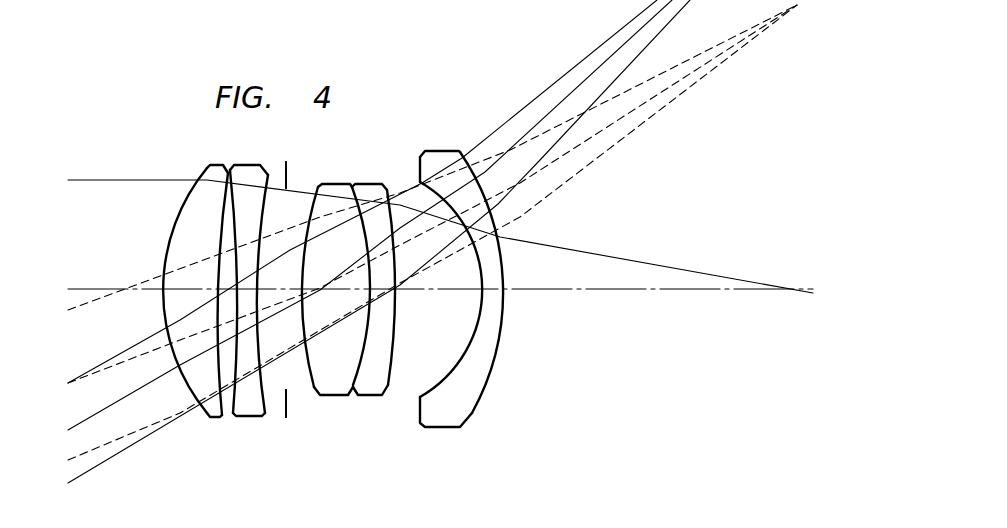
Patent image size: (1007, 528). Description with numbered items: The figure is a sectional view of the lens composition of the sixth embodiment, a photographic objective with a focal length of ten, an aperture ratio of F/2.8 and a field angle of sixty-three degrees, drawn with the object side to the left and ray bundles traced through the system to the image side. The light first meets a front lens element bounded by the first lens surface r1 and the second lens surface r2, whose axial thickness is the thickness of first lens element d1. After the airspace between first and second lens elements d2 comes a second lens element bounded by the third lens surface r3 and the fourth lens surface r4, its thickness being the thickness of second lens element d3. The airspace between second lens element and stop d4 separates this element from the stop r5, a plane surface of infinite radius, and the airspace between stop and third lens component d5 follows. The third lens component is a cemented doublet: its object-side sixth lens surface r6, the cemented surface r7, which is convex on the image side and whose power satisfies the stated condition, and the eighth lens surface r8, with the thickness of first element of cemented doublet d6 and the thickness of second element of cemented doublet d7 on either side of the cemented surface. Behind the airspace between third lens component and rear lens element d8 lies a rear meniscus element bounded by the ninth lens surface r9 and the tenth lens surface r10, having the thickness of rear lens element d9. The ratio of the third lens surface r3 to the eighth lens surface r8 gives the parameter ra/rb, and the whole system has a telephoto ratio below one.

The thickness of first lens element d1 is at (192, 290).
The airspace between first and second lens elements d2 is at (222, 290).
The thickness of second lens element d3 is at (247, 290).
The airspace between second lens element and stop d4 is at (278, 290).
The airspace between stop and third lens component d5 is at (291, 292).
The thickness of first element of cemented doublet d6 is at (333, 290).
The thickness of second element of cemented doublet d7 is at (380, 290).
The airspace between third lens component and rear lens element d8 is at (444, 289).
The thickness of rear lens element d9 is at (495, 290).
The first lens surface r1 is at (206, 414).
The second lens surface r2 is at (221, 417).
The third lens surface r3 is at (235, 414).
The fourth lens surface r4 is at (266, 415).
The stop r5 is at (289, 404).
The sixth lens surface r6 is at (314, 388).
The cemented surface r7 is at (354, 388).
The eighth lens surface r8 is at (388, 388).
The ninth lens surface r9 is at (418, 398).
The tenth lens surface r10 is at (473, 414).